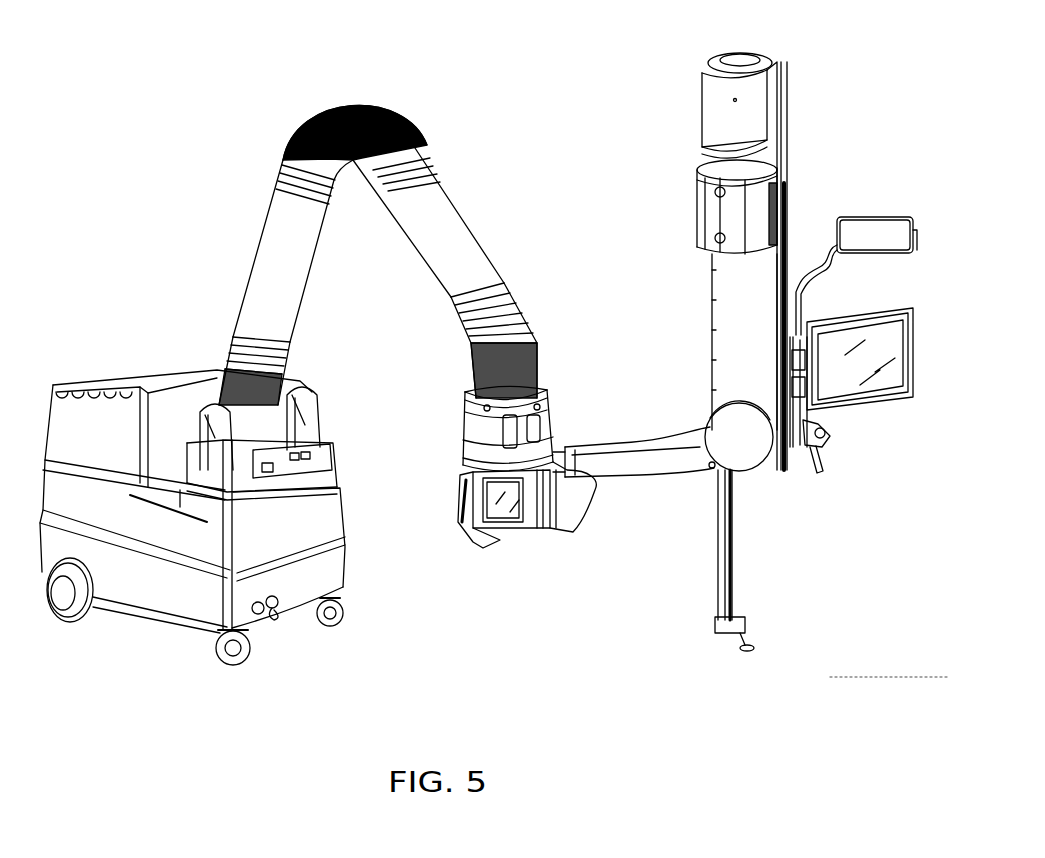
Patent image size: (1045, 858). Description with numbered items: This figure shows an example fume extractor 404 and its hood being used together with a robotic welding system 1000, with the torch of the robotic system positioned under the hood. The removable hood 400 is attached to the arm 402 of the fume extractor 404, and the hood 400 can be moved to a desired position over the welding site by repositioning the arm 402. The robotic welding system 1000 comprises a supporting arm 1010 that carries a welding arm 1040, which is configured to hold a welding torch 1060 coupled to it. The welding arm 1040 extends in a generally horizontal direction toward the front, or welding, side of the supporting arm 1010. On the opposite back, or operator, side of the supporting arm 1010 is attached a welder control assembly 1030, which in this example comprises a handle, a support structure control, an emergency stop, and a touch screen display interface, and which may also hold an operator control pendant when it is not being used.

The removable hood 400 is at (450, 545).
The arm 402 is at (275, 133).
The fume extractor 404 is at (100, 338).
The robotic welding system 1000 is at (655, 163).
The supporting arm 1010 is at (835, 132).
The welder control assembly 1030 is at (855, 472).
The welding arm 1040 is at (600, 503).
The welding torch 1060 is at (512, 575).